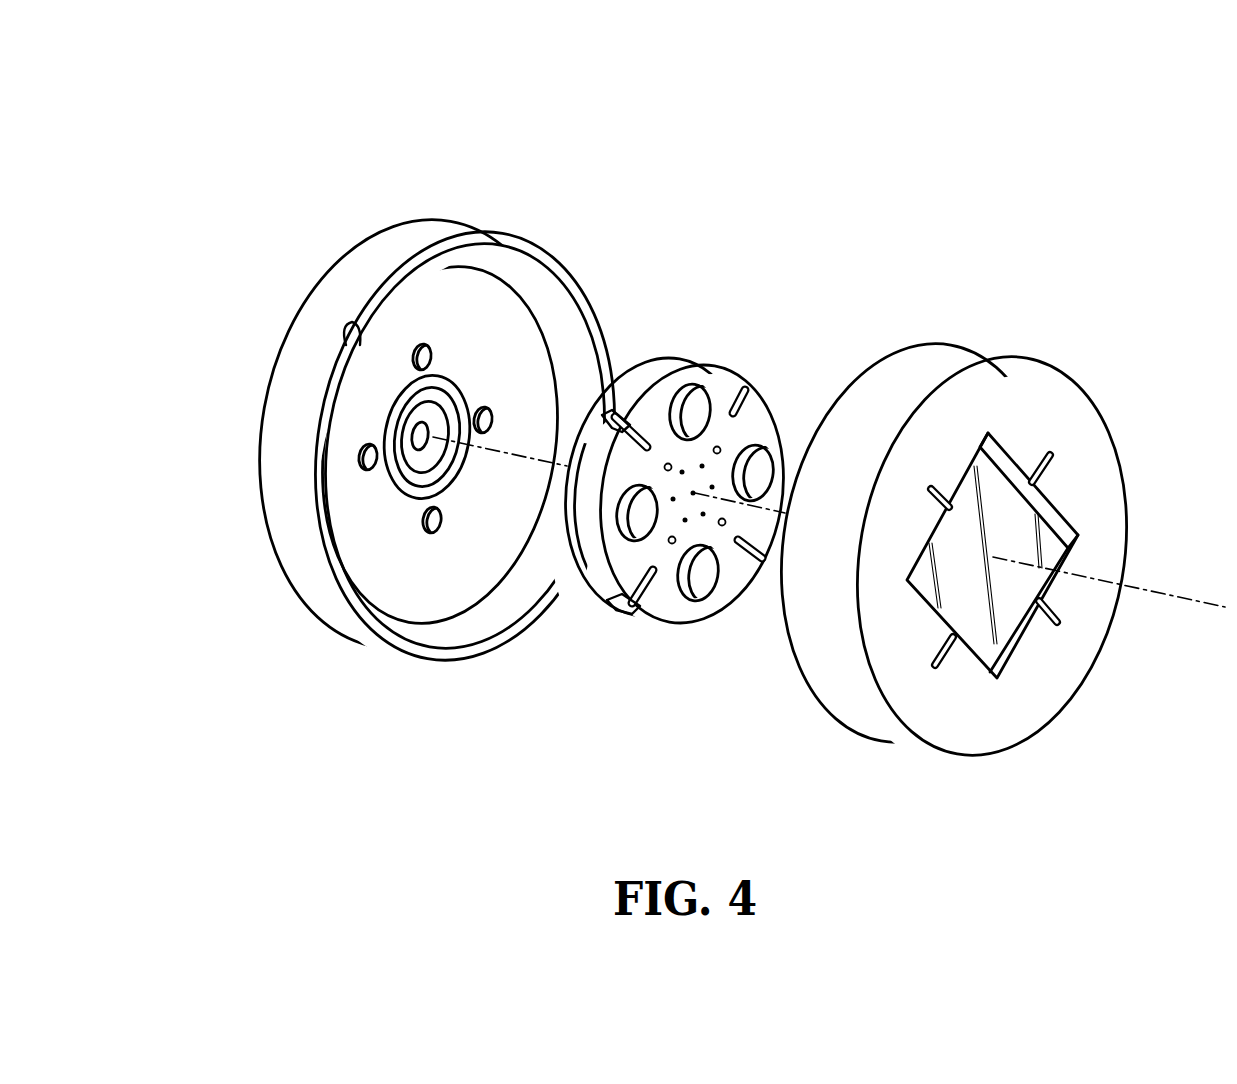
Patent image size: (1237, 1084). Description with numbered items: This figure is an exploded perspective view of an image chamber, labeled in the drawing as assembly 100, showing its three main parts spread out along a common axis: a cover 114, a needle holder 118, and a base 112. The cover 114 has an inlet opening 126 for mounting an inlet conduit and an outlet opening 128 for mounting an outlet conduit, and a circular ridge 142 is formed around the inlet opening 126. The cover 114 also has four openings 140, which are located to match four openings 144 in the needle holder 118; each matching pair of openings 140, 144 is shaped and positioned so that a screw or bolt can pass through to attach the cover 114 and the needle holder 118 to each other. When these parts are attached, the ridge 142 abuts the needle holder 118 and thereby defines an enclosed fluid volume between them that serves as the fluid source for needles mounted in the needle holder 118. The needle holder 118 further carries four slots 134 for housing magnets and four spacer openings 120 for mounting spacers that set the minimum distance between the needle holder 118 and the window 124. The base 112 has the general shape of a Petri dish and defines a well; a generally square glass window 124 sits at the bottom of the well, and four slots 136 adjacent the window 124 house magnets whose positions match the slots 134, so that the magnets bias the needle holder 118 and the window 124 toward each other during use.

The imaging assembly 100 is at (328, 128).
The base 112 is at (866, 716).
The cover 114 is at (300, 570).
The needle holder 118 is at (598, 577).
The spacer openings 120 is at (718, 446).
The glass window 124 is at (1002, 532).
The inlet opening 126 is at (430, 436).
The outlet opening 128 is at (352, 322).
The slots 134 is at (622, 612).
The slots 136 is at (1059, 619).
The openings 140 is at (495, 417).
The circular ridge 142 is at (397, 410).
The openings 144 is at (768, 472).